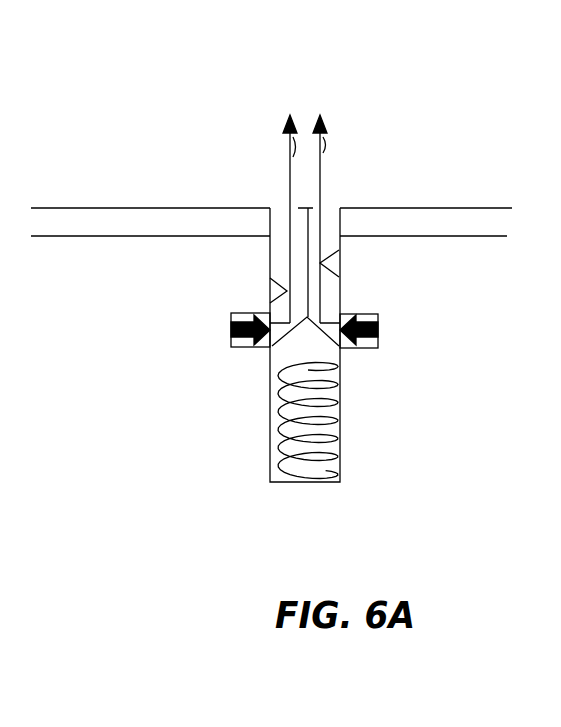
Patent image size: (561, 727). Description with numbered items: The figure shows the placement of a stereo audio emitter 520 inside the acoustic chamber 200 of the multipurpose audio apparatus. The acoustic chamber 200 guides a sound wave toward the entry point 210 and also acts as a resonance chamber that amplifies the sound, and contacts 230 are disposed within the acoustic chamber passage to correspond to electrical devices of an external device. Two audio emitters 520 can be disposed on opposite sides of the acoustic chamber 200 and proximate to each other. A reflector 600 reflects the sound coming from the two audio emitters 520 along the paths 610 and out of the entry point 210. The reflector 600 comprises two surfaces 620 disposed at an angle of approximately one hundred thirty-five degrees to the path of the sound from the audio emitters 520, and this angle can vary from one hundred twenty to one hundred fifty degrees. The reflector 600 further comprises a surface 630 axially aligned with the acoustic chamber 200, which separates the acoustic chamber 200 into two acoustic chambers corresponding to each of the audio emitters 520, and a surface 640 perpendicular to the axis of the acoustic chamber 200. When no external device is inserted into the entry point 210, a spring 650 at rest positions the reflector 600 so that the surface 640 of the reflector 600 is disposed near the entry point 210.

The acoustic chamber 200 is at (278, 205).
The entry point 210 is at (339, 208).
The contacts 230 is at (290, 280).
The stereo audio emitter 520 is at (232, 348).
The reflector 600 is at (308, 316).
The paths 610 is at (315, 123).
The surfaces 620 is at (322, 347).
The surface 630 is at (303, 242).
The surface 640 is at (308, 207).
The spring 650 is at (302, 480).